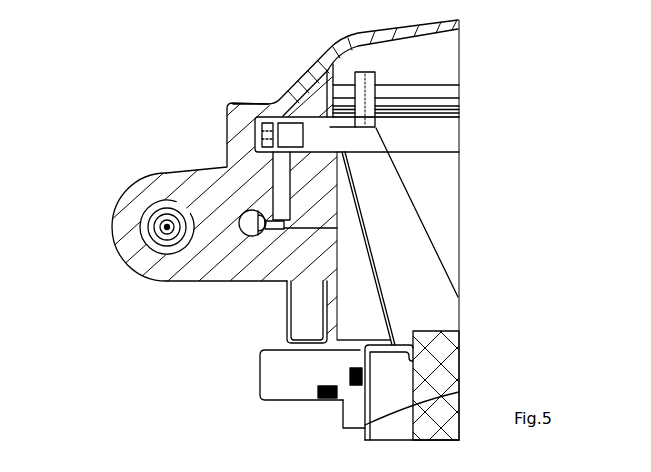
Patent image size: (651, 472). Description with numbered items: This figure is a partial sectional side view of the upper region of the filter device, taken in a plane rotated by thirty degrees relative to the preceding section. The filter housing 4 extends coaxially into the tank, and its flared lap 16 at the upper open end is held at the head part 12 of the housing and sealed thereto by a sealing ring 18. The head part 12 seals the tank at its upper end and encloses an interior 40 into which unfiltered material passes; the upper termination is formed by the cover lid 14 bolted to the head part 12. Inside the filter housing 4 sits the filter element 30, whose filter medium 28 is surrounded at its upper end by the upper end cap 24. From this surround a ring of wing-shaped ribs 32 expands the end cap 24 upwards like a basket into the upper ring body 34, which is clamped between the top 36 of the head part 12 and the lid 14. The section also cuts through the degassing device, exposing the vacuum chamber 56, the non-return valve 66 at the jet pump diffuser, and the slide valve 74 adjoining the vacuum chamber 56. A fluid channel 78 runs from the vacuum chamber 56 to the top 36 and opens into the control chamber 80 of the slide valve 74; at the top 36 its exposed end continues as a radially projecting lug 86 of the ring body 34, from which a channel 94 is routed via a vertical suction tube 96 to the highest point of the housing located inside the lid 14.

The filter housing 4 is at (325, 405).
The head part 12 is at (330, 308).
The cover lid 14 is at (328, 47).
The flared lap 16 is at (342, 349).
The sealing ring 18 is at (345, 352).
The upper end cap 24 is at (378, 326).
The filter medium 28 is at (445, 370).
The filter element 30 is at (368, 408).
The wing-shaped ribs 32 is at (243, 284).
The upper ring body 34 is at (258, 112).
The top of the head part 36 is at (200, 170).
The interior 40 is at (447, 183).
The vacuum chamber 56 is at (247, 221).
The non-return valve 66 is at (150, 238).
The slide valve 74 is at (292, 268).
The fluid channel 78 is at (281, 181).
The control chamber 80 is at (291, 212).
The radially projecting lug 86 is at (232, 118).
The channel 94 is at (336, 138).
The vertical suction tube 96 is at (373, 78).